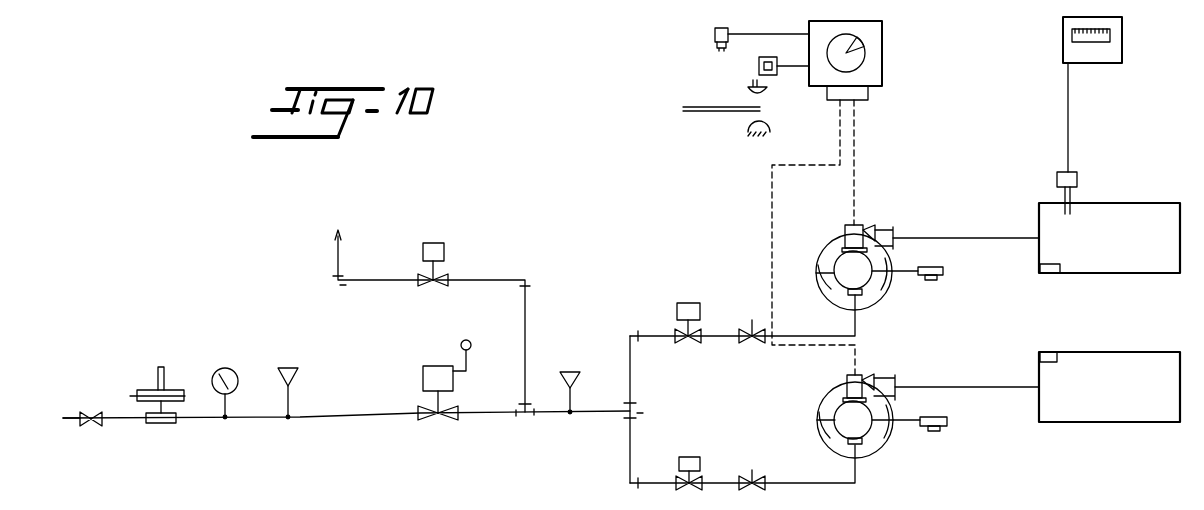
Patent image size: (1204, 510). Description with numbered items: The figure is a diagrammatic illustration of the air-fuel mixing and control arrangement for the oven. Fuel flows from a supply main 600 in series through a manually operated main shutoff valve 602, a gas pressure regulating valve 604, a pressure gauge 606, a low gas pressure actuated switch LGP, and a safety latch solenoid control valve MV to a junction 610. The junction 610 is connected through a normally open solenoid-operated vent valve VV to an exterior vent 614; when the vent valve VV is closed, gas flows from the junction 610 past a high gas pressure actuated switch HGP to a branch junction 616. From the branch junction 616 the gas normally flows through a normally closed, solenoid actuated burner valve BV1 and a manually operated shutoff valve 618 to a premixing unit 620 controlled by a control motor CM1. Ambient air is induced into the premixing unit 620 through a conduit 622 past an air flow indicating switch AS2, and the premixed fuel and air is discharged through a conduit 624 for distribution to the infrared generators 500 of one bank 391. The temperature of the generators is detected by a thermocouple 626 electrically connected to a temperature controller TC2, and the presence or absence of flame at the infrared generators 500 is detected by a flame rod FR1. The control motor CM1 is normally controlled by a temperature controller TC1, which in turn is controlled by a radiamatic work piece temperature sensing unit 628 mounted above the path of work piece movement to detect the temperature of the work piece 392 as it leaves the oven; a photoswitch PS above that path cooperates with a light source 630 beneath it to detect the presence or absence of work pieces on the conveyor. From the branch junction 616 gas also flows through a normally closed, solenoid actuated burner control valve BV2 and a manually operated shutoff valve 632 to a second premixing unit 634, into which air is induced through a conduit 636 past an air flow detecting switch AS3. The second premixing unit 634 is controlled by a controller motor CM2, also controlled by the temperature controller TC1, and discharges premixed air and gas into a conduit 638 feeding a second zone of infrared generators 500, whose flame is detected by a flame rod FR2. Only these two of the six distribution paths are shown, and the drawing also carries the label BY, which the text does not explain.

The supply main 600 is at (78, 417).
The manually operated main shutoff valve 602 is at (92, 411).
The gas pressure regulating valve 604 is at (160, 425).
The pressure gauge 606 is at (236, 357).
The low gas pressure actuated switch LGP is at (288, 372).
The safety latch solenoid control valve MV is at (440, 366).
The solenoid-operated vent valve VV is at (436, 243).
The exterior vent 614 is at (335, 233).
The junction 610 is at (525, 418).
The high gas pressure actuated switch HGP is at (569, 375).
The branch junction 616 is at (640, 409).
The solenoid actuated burner valve BV1 is at (689, 303).
The manually operated shutoff valve 618 is at (752, 320).
The solenoid actuated burner control valve BV2 is at (694, 447).
The manually operated shutoff valve 632 is at (777, 452).
The control motor CM1 is at (845, 230).
The premixing unit 620 is at (833, 273).
The conduit 622 is at (887, 273).
The air flow indicating switch AS2 is at (937, 263).
The conduit 624 is at (990, 237).
The controller motor CM2 is at (848, 380).
The second premixing unit 634 is at (818, 421).
The conduit 636 is at (903, 426).
The air flow detecting switch AS3 is at (932, 417).
The conduit 638 is at (986, 384).
The flame rod FR1 is at (1165, 207).
The flame rod FR2 is at (1172, 355).
The infrared generators 500 is at (1040, 268).
The bank 391 is at (1088, 257).
The thermocouple 626 is at (1077, 180).
The temperature controller TC1 is at (882, 53).
The radiamatic work piece temperature sensing unit 628 is at (713, 34).
The photoswitch PS is at (767, 91).
The work piece 392 is at (714, 88).
The light source 630 is at (761, 122).
The temperature controller TC2 is at (1067, 43).
The bypass BY is at (104, 468).